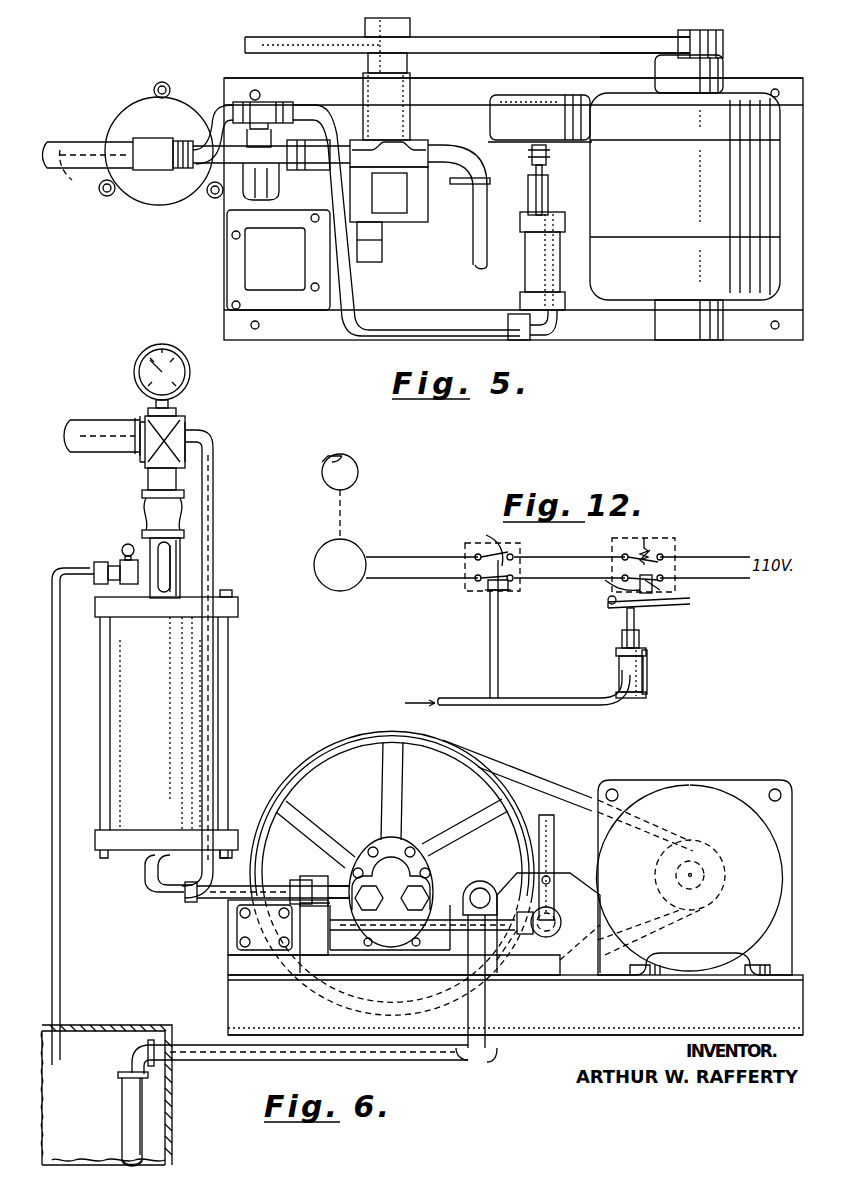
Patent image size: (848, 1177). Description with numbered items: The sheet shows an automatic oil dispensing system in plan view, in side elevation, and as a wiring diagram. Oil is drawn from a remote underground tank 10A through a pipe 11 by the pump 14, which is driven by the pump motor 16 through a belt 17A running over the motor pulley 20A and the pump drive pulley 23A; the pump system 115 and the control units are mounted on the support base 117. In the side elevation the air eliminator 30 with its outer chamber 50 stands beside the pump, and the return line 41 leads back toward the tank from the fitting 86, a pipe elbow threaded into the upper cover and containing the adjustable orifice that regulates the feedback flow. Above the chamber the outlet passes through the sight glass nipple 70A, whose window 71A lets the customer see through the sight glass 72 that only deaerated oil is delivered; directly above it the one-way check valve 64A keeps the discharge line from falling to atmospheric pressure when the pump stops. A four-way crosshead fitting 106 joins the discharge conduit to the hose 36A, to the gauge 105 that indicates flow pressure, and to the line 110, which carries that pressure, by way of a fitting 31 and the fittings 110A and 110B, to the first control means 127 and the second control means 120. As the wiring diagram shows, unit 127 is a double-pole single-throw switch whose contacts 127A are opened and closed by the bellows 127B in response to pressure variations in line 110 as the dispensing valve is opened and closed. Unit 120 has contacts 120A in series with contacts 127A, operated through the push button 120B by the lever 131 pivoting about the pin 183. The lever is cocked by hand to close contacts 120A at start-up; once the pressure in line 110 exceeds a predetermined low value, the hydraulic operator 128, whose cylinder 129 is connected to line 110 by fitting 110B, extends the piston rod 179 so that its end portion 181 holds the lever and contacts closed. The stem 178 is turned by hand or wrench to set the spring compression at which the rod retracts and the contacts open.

In FIG. 6, the underground tank 10A is at (172, 1142).
In FIG. 5, the suction pipe 11 is at (466, 232).
In FIG. 6, the suction pipe 11 is at (492, 995).
In FIG. 5, the pump 14 is at (410, 146).
In FIG. 12, the pump 14 is at (358, 474).
In FIG. 6, the pump 14 is at (388, 852).
In FIG. 5, the pump motor 16 is at (690, 204).
In FIG. 12, the pump motor 16 is at (355, 548).
In FIG. 6, the pump motor 16 is at (748, 932).
In FIG. 5, the belt 17A is at (596, 40).
In FIG. 6, the belt 17A is at (540, 776).
In FIG. 5, the motor pulley 20A is at (712, 36).
In FIG. 6, the motor pulley 20A is at (720, 870).
In FIG. 5, the pump drive pulley 23A is at (468, 37).
In FIG. 12, the pump drive pulley 23A is at (370, 736).
In FIG. 6, the pump drive pulley 23A is at (368, 738).
In FIG. 6, the filter element 30 is at (191, 754).
In FIG. 6, the pipe fitting 31 is at (262, 888).
In FIG. 5, the hose 36A is at (72, 142).
In FIG. 6, the hose 36A is at (106, 422).
In FIG. 5, the return line 41 is at (74, 180).
In FIG. 6, the return line 41 is at (60, 730).
In FIG. 6, the outer chamber 50 is at (165, 694).
In FIG. 6, the one-way check valve 64A is at (135, 503).
In FIG. 6, the sight glass nipple 70A is at (180, 562).
In FIG. 6, the window 71A is at (168, 576).
In FIG. 6, the sight glass 72 is at (156, 552).
In FIG. 6, the fitting 86 is at (118, 562).
In FIG. 5, the gauge 105 is at (172, 176).
In FIG. 6, the gauge 105 is at (190, 364).
In FIG. 6, the crosshead fitting 106 is at (180, 420).
In FIG. 5, the line 110 is at (212, 108).
In FIG. 12, the line 110 is at (462, 698).
In FIG. 6, the line 110 is at (213, 522).
In FIG. 5, the fitting 110A is at (245, 176).
In FIG. 12, the fitting 110A is at (490, 620).
In FIG. 5, the fitting 110B is at (550, 325).
In FIG. 5, the pump system 115 is at (532, 76).
In FIG. 6, the pump system 115 is at (560, 1044).
In FIG. 5, the support base 117 is at (745, 328).
In FIG. 6, the support base 117 is at (640, 1012).
In FIG. 5, the second control means 120 is at (525, 100).
In FIG. 12, the second control means 120 is at (640, 536).
In FIG. 6, the second control means 120 is at (570, 892).
In FIG. 12, the contacts 120A is at (678, 550).
In FIG. 12, the push button 120B is at (606, 582).
In FIG. 5, the first control means 127 is at (290, 271).
In FIG. 12, the first control means 127 is at (518, 540).
In FIG. 6, the first control means 127 is at (238, 947).
In FIG. 12, the contacts 127A is at (484, 530).
In FIG. 12, the bellows 127B is at (508, 590).
In FIG. 5, the hydraulic operator 128 is at (533, 261).
In FIG. 12, the hydraulic operator 128 is at (606, 673).
In FIG. 12, the cylinder 129 is at (648, 672).
In FIG. 6, the cylinder 129 is at (574, 917).
In FIG. 5, the lever 131 is at (536, 164).
In FIG. 12, the lever 131 is at (665, 606).
In FIG. 6, the lever 131 is at (556, 828).
In FIG. 5, the stem 178 is at (528, 201).
In FIG. 5, the piston rod 179 is at (545, 176).
In FIG. 12, the end portion 181 is at (628, 624).
In FIG. 12, the pin 183 is at (607, 602).